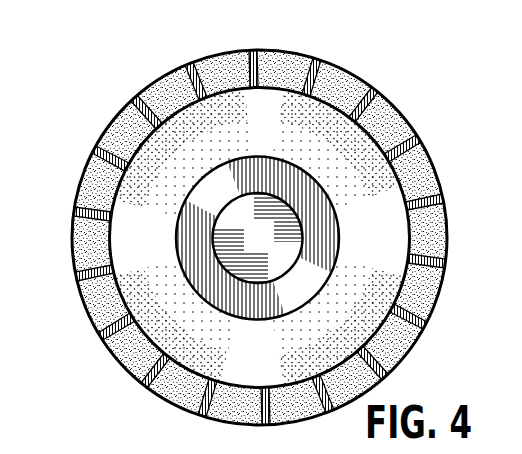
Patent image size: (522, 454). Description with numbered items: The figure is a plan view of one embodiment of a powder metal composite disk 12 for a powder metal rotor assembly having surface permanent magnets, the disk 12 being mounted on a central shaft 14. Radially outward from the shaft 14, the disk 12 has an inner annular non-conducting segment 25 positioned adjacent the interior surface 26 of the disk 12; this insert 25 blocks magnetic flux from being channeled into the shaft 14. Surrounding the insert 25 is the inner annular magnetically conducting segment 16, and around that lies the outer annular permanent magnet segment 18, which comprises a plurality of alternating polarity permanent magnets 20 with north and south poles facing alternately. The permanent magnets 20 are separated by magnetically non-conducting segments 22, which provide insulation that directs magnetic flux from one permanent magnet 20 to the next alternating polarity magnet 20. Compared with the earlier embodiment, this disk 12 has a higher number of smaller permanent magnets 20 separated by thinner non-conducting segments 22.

The powder metal composite disk 12 is at (458, 95).
The shaft 14 is at (272, 250).
The inner annular magnetically conducting segment 16 is at (260, 360).
The outer annular permanent magnet segment 18 is at (110, 130).
The permanent magnets 20 is at (272, 50).
The magnetically non-conducting segments 22 is at (317, 60).
The inner annular non-conducting segment 25 is at (183, 210).
The interior surface 26 is at (297, 241).